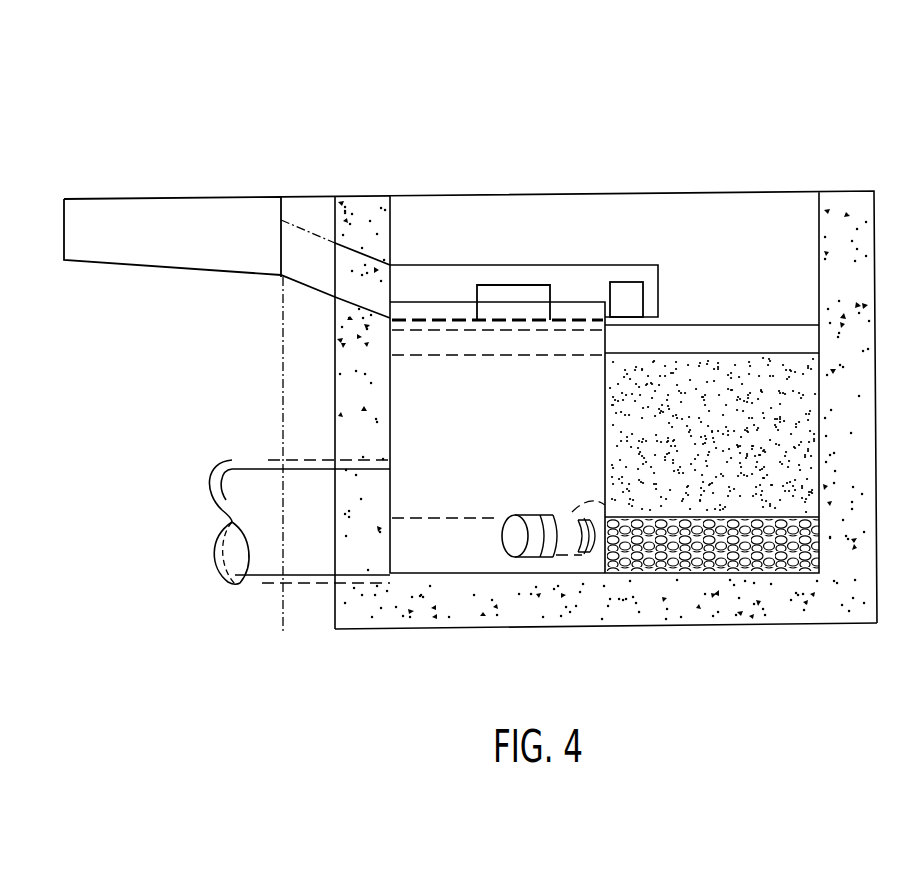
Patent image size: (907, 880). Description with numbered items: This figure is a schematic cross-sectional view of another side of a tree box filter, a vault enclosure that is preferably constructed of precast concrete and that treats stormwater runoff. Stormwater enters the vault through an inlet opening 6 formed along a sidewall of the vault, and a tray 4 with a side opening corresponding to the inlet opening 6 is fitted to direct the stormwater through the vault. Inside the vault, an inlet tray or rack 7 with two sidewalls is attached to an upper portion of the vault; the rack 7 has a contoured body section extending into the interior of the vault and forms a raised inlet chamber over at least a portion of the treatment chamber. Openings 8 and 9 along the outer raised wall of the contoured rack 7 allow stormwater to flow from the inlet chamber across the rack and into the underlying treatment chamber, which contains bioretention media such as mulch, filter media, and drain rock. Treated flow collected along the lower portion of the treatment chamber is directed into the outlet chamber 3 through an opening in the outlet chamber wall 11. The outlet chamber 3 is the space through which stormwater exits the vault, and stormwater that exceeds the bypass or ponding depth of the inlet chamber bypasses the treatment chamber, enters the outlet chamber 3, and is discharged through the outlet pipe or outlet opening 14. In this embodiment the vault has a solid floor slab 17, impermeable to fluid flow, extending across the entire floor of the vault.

The outlet chamber 3 is at (435, 302).
The tray 4 is at (201, 197).
The inlet opening 6 is at (363, 242).
The inlet tray or rack 7 is at (523, 264).
The opening 8 is at (550, 285).
The opening 9 is at (627, 282).
The outlet chamber wall 11 is at (520, 556).
The outlet pipe or outlet opening 14 is at (285, 578).
The solid floor slab 17 is at (700, 608).